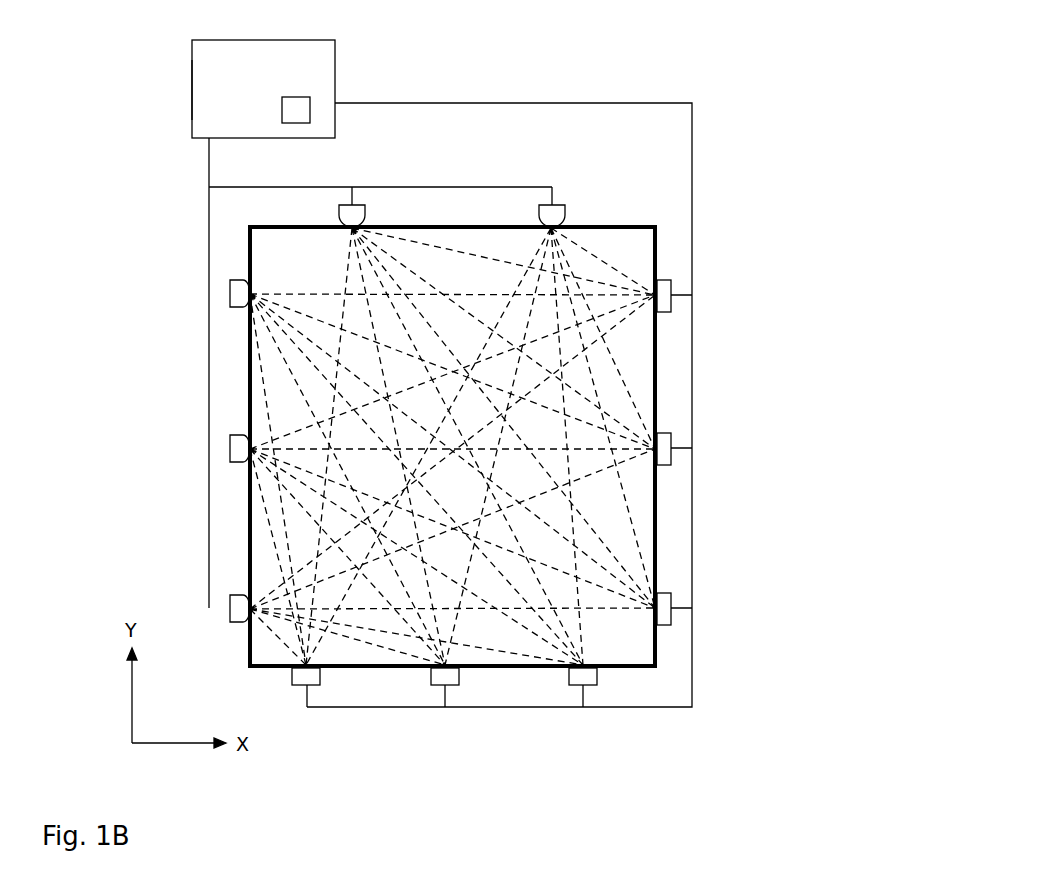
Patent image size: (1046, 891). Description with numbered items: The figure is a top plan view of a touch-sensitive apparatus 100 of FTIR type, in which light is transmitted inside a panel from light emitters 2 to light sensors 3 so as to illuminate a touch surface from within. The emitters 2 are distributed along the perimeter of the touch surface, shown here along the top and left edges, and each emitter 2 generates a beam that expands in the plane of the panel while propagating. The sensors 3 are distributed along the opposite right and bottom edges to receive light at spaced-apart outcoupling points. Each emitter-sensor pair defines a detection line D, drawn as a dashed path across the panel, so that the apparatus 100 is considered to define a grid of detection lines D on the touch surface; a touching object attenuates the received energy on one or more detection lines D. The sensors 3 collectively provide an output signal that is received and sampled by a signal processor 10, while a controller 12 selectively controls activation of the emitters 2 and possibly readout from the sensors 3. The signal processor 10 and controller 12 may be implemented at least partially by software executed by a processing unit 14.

The touch-sensitive apparatus 100 is at (738, 122).
The signal processor 10 is at (315, 47).
The controller 12 is at (193, 68).
The processing unit 14 is at (297, 97).
The light emitters 2 is at (355, 212).
The light sensors 3 is at (665, 608).
The detection lines D is at (609, 310).